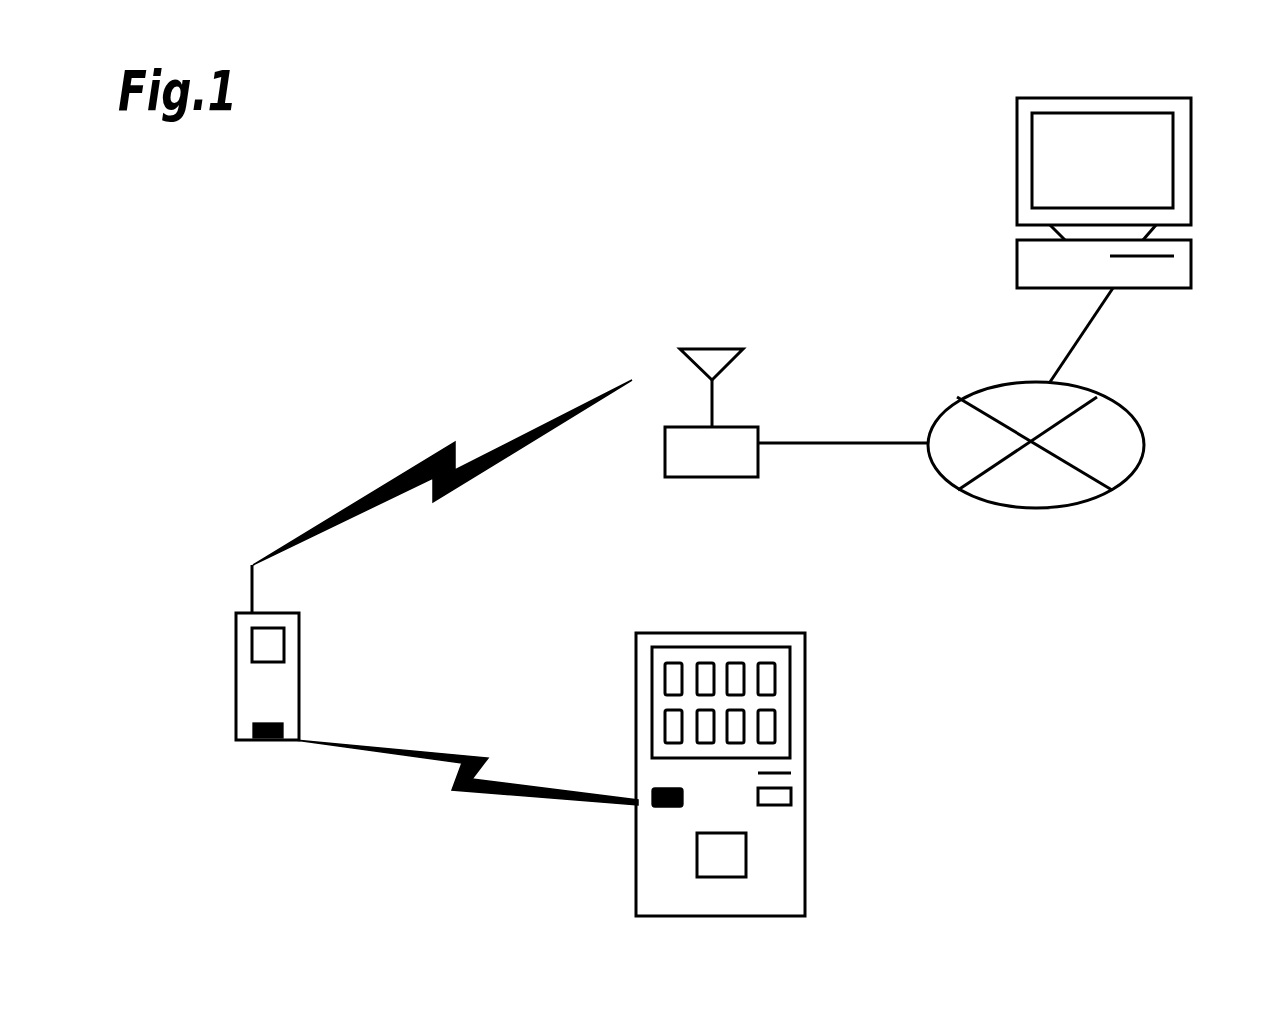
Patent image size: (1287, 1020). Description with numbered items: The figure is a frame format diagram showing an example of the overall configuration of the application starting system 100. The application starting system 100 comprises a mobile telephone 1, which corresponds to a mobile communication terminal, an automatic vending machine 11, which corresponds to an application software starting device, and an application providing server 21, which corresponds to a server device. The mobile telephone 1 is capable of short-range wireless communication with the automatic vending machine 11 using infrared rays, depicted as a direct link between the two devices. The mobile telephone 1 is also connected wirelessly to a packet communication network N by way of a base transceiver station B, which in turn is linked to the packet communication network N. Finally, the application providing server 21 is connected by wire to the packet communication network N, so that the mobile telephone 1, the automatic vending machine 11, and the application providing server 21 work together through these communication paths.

The application starting system 100 is at (446, 224).
The mobile telephone 1 is at (235, 615).
The base transceiver station B is at (758, 427).
The packet communication network N is at (1127, 413).
The application providing server 21 is at (1190, 135).
The automatic vending machine 11 is at (805, 670).